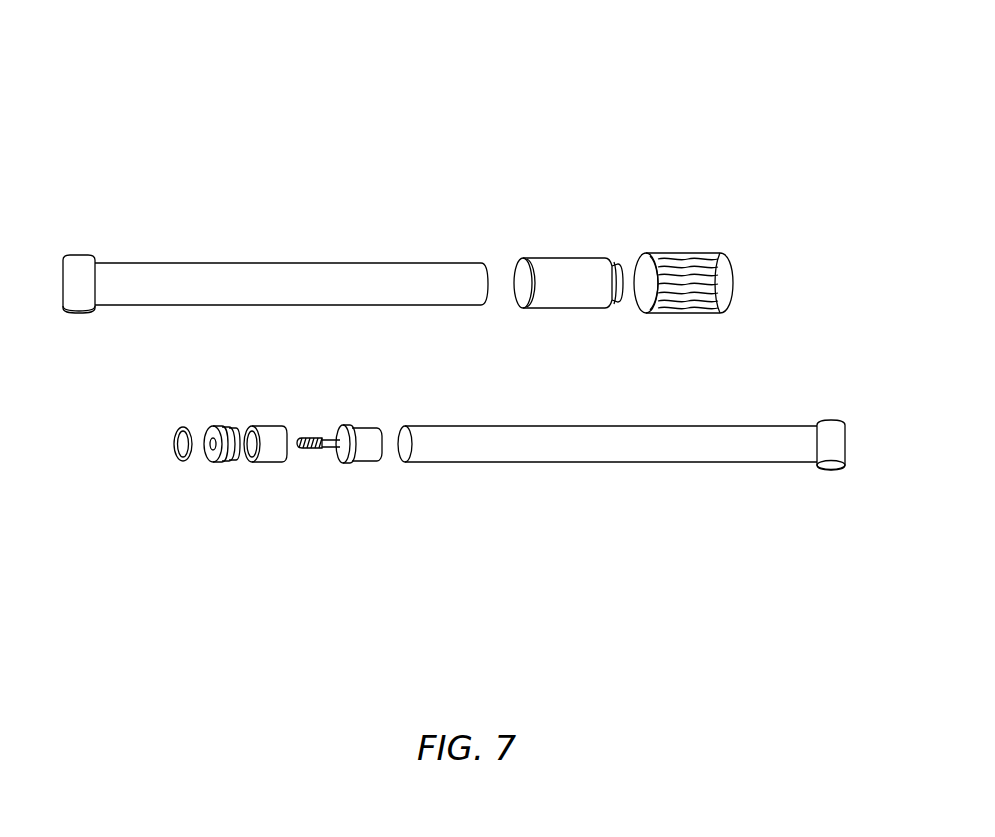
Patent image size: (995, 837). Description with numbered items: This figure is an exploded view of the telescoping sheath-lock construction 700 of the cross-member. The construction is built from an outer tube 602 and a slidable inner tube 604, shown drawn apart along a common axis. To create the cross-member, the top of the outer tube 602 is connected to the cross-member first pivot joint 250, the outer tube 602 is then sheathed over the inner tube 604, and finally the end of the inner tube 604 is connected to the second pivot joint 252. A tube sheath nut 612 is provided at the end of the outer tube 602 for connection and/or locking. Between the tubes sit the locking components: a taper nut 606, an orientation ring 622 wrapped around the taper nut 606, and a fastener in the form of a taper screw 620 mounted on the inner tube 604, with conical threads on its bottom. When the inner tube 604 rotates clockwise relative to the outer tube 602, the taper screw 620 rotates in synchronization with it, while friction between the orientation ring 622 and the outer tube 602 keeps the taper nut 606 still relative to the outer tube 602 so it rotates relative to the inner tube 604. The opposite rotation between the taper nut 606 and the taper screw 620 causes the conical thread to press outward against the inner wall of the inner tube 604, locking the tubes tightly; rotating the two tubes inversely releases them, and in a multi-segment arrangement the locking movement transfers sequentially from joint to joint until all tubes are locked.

The telescoping sheath-lock construction 700 is at (378, 117).
The cross-member first pivot joint 250 is at (83, 276).
The second pivot joint 252 is at (829, 468).
The outer tube 602 is at (195, 278).
The inner tube 604 is at (437, 455).
The taper nut 606 is at (222, 463).
The tube sheath nut 612 is at (570, 274).
The taper screw 620 is at (338, 463).
The orientation ring 622 is at (186, 462).